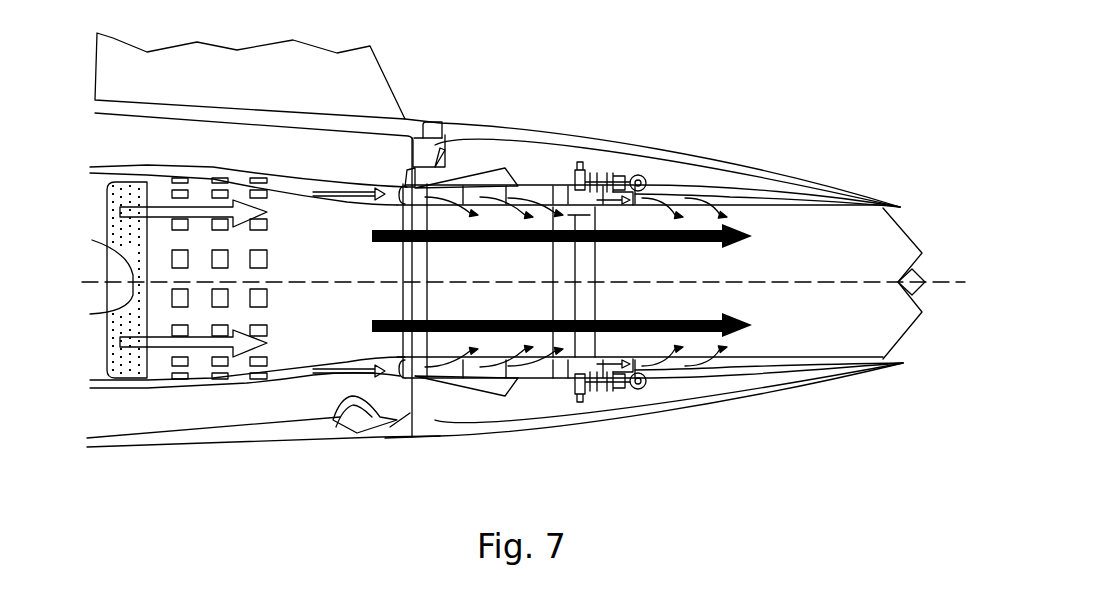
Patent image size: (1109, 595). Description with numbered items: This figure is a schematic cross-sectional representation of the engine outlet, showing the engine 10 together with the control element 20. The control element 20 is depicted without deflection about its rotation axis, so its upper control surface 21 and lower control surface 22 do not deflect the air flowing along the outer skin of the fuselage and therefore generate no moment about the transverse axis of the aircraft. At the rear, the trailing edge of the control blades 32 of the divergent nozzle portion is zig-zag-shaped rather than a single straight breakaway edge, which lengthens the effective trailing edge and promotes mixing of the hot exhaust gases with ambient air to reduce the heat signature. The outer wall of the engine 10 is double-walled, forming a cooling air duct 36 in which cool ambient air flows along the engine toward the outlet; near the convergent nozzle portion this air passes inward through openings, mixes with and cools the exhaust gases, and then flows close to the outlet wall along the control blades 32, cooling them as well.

The engine 10 is at (303, 320).
The control element 20 is at (817, 132).
The upper control surface 21 is at (680, 158).
The lower control surface 22 is at (685, 417).
The control blades 32 is at (882, 245).
The cooling air duct 36 is at (582, 473).